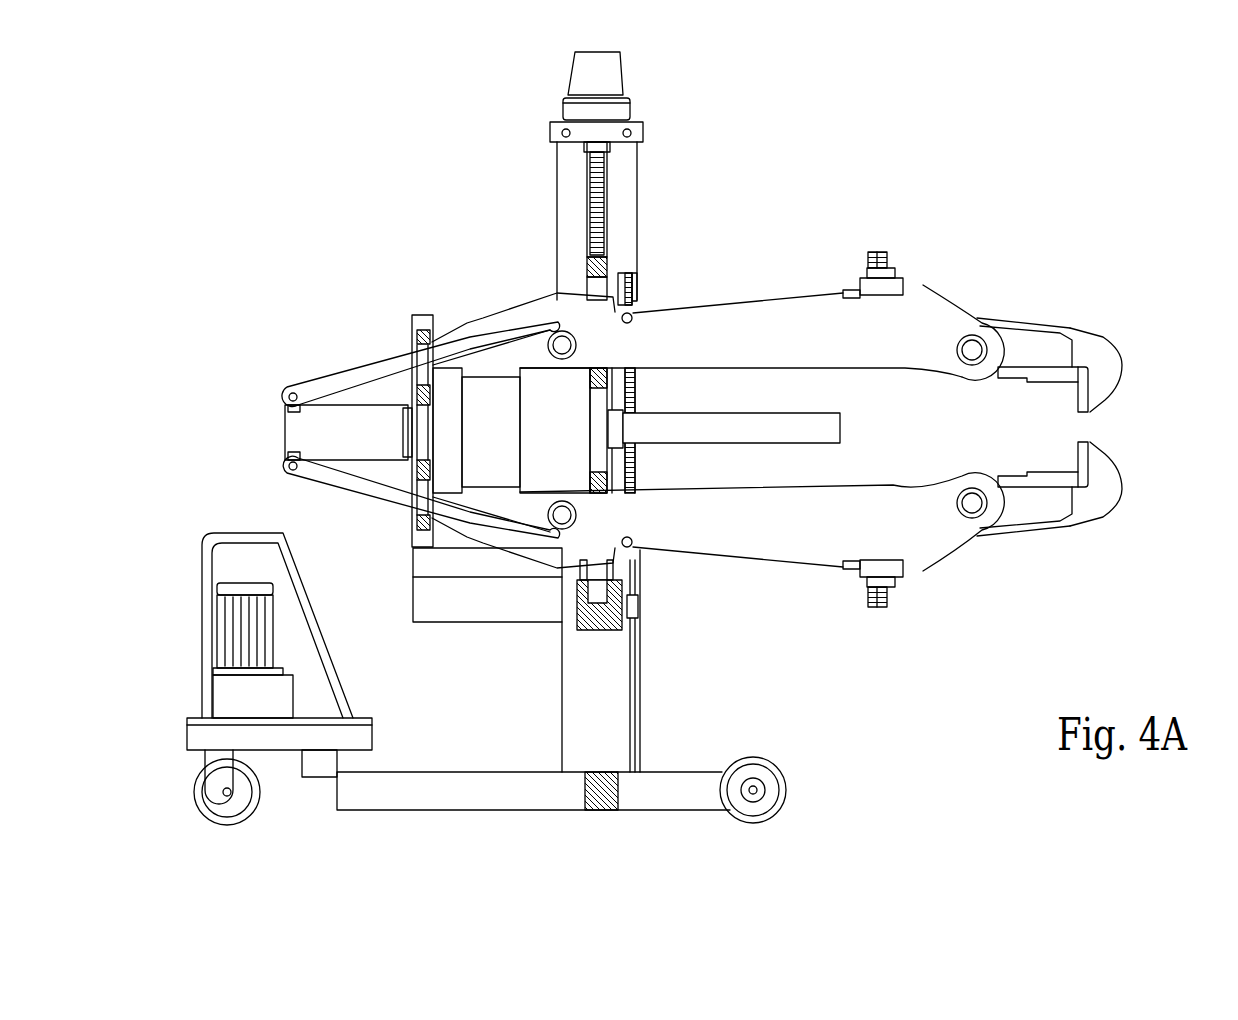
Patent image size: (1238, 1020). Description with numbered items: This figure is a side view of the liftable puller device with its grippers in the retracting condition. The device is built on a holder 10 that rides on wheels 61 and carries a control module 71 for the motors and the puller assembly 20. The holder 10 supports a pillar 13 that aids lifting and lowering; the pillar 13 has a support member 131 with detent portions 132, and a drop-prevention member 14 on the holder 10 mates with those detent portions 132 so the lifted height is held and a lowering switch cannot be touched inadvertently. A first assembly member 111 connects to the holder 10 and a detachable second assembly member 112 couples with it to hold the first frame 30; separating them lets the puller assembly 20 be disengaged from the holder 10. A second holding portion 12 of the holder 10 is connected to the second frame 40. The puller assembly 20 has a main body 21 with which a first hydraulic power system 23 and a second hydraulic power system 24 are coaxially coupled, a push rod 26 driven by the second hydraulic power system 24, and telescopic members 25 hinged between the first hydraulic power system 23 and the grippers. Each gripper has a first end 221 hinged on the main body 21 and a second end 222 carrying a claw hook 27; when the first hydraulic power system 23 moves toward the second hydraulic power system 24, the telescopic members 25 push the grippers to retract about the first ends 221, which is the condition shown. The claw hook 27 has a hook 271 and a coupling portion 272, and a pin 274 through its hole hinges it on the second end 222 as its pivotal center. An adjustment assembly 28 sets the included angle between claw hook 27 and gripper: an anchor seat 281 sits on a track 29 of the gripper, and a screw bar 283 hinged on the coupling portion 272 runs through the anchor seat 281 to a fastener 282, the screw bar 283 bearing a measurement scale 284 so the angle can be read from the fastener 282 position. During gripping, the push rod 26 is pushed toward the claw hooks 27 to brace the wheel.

The holder 10 is at (452, 788).
The second holding portion 12 is at (607, 616).
The pillar 13 is at (567, 212).
The drop-prevention member 14 is at (640, 604).
The puller assembly 20 is at (772, 280).
The main body 21 is at (490, 388).
The first hydraulic power system 23 is at (420, 427).
The second hydraulic power system 24 is at (600, 432).
The telescopic member 25 is at (377, 372).
The push rod 26 is at (832, 428).
The claw hook 27 is at (1152, 282).
The adjustment assembly 28 is at (837, 133).
The track 29 is at (853, 295).
The first frame 30 is at (413, 340).
The second frame 40 is at (593, 289).
The wheel 61 is at (207, 797).
The control module 71 is at (220, 695).
The first assembly member 111 is at (430, 545).
The second assembly member 112 is at (421, 318).
The support member 131 is at (632, 303).
The detent portion 132 is at (640, 303).
The first end 221 is at (574, 343).
The second end 222 is at (923, 345).
The hook 271 is at (1103, 365).
The coupling portion 272 is at (980, 312).
The pin 274 is at (985, 347).
The anchor seat 281 is at (905, 283).
The fastener 282 is at (898, 278).
The screw bar 283 is at (866, 257).
The measurement scale 284 is at (882, 253).